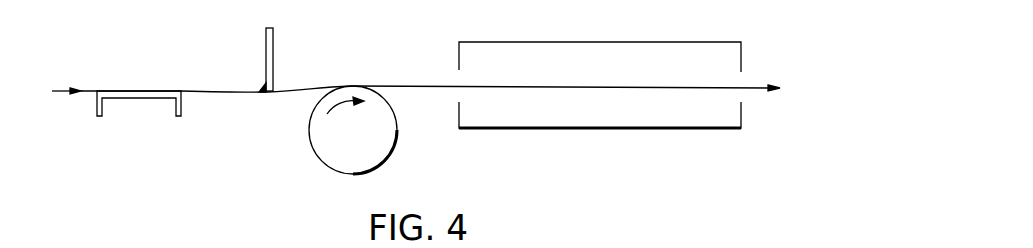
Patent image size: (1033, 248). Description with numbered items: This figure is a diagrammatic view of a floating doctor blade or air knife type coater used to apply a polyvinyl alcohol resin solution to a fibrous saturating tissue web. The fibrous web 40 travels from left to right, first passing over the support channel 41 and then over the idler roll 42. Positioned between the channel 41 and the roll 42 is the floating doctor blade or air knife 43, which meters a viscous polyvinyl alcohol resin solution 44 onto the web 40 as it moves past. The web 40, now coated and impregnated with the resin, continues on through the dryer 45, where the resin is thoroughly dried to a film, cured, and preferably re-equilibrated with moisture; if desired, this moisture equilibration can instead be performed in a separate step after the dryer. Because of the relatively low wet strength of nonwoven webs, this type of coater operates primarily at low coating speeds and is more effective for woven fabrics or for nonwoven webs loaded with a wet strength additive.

The fibrous web 40 is at (81, 92).
The support channel 41 is at (128, 100).
The idler roll 42 is at (321, 158).
The floating doctor blade or air knife 43 is at (266, 37).
The polyvinyl alcohol resin solution 44 is at (262, 89).
The dryer 45 is at (518, 129).